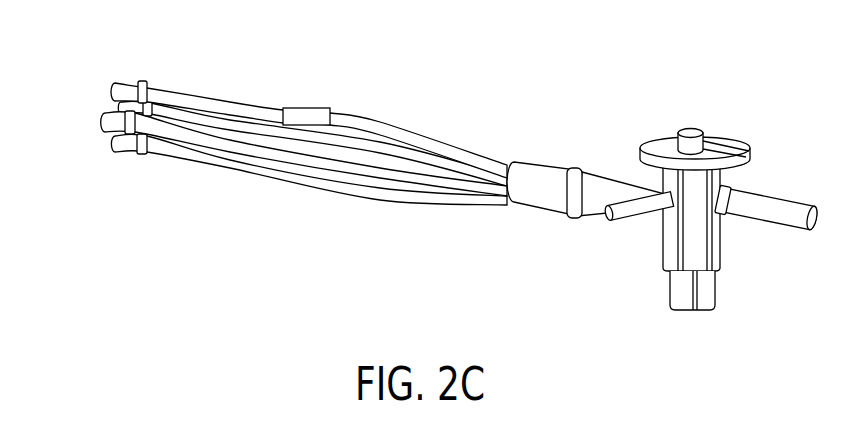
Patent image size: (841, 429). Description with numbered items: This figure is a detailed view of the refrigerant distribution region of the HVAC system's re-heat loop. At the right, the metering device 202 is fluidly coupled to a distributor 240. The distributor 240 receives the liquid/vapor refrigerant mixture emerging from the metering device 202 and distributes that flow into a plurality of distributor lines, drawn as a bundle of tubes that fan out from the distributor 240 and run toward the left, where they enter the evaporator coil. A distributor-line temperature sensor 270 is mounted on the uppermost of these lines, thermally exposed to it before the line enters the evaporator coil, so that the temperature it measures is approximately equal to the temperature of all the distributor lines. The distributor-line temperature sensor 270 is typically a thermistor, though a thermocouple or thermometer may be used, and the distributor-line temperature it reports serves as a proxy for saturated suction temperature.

The distributor-line temperature sensor 270 is at (303, 113).
The distributor 240 is at (530, 172).
The metering device 202 is at (715, 252).